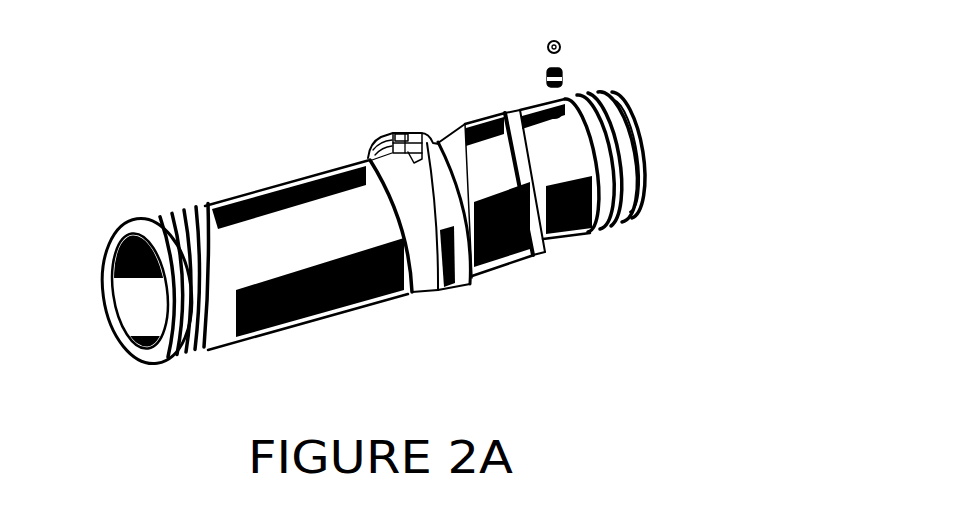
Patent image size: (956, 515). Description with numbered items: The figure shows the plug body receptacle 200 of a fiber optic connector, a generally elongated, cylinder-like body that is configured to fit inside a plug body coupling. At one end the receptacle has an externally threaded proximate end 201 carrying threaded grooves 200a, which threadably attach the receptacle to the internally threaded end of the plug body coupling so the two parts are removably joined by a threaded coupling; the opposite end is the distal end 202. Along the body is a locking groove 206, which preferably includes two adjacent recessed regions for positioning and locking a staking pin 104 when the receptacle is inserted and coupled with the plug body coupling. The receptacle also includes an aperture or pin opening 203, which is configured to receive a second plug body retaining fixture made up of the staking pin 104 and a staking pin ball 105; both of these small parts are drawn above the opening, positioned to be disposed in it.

The plug body receptacle 200 is at (238, 106).
The threaded grooves 200a is at (637, 213).
The proximate end 201 is at (645, 143).
The distal end 202 is at (137, 300).
The pin opening 203 is at (548, 101).
The locking groove 206 is at (395, 133).
The staking pin 104 is at (545, 72).
The staking pin ball 105 is at (562, 45).